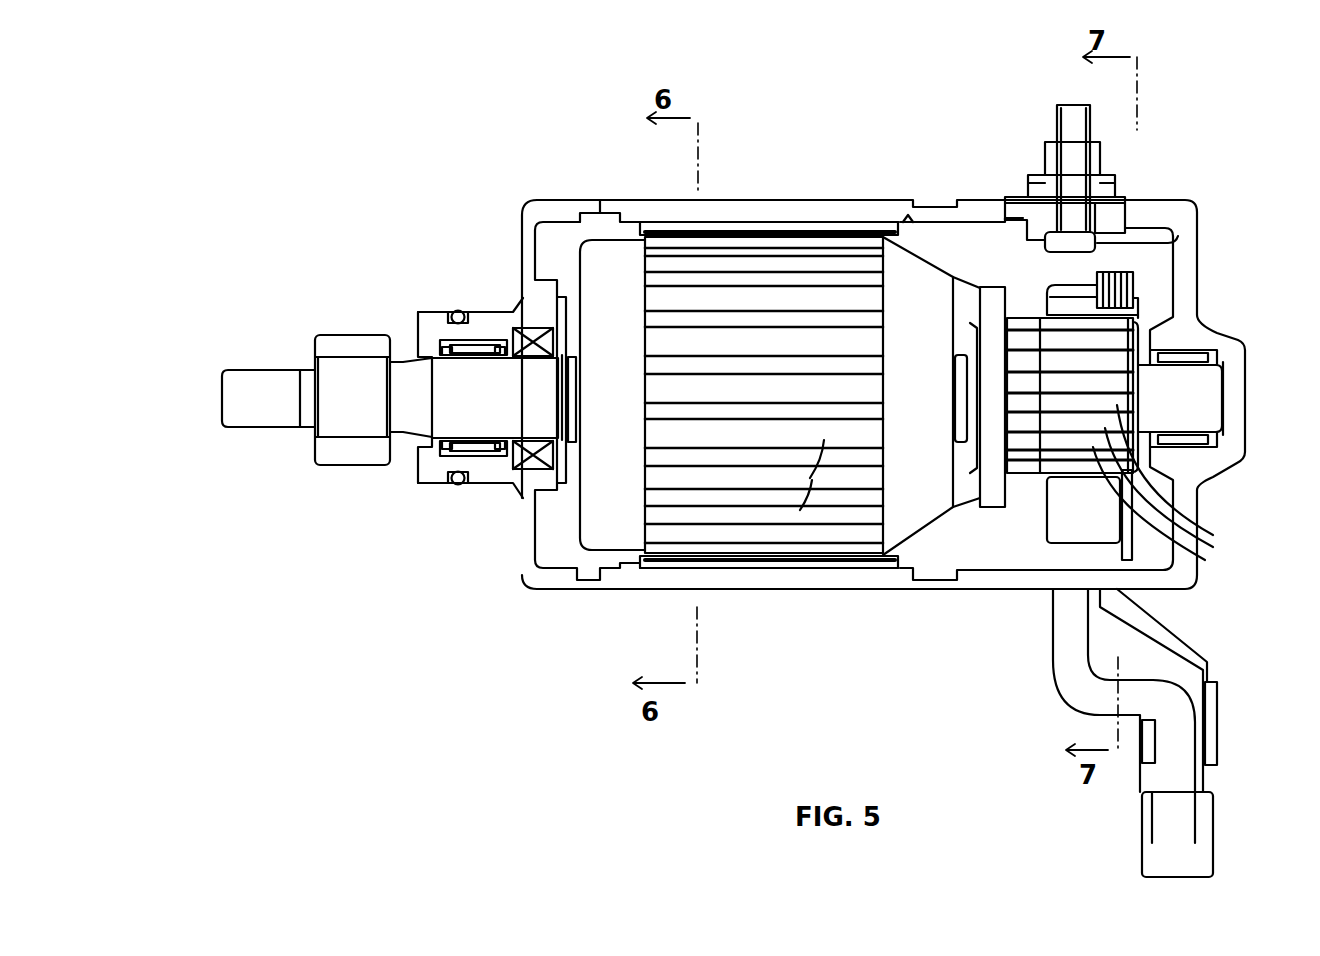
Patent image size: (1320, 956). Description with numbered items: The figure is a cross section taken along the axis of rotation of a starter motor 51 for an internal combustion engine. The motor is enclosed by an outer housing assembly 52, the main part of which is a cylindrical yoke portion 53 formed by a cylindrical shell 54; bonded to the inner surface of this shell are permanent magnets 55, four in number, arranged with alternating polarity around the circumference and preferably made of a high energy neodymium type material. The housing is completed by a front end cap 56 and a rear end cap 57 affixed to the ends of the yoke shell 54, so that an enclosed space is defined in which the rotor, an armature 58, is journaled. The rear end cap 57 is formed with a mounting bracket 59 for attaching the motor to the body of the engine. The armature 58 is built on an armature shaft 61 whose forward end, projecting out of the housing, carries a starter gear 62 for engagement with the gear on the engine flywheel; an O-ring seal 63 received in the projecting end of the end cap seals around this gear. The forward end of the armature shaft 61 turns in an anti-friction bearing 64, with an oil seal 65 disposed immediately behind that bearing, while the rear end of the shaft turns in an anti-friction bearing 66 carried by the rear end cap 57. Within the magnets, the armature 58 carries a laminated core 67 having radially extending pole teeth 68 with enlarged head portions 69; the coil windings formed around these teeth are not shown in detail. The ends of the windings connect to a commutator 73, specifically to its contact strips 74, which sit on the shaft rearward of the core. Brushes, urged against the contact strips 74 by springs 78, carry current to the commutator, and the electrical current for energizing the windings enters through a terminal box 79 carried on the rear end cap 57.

The starter motor 51 is at (1184, 154).
The outer housing assembly 52 is at (896, 600).
The cylindrical yoke portion 53 is at (867, 134).
The cylindrical shell 54 is at (777, 207).
The permanent magnets 55 is at (813, 230).
The front end cap 56 is at (537, 210).
The rear end cap 57 is at (1192, 212).
The armature 58 is at (938, 535).
The mounting bracket 59 is at (1163, 662).
The armature shaft 61 is at (272, 380).
The starter gear 62 is at (357, 342).
The O-ring seal 63 is at (457, 311).
The anti-friction bearing 64 is at (478, 455).
The oil seal 65 is at (520, 323).
The anti-friction bearing 66 is at (1187, 358).
The core 67 is at (783, 571).
The pole teeth 68 is at (822, 433).
The enlarged head portions 69 is at (693, 512).
The commutator 73 is at (1038, 484).
The contact strips 74 is at (1147, 490).
The springs 78 is at (1115, 272).
The terminal box 79 is at (1068, 127).